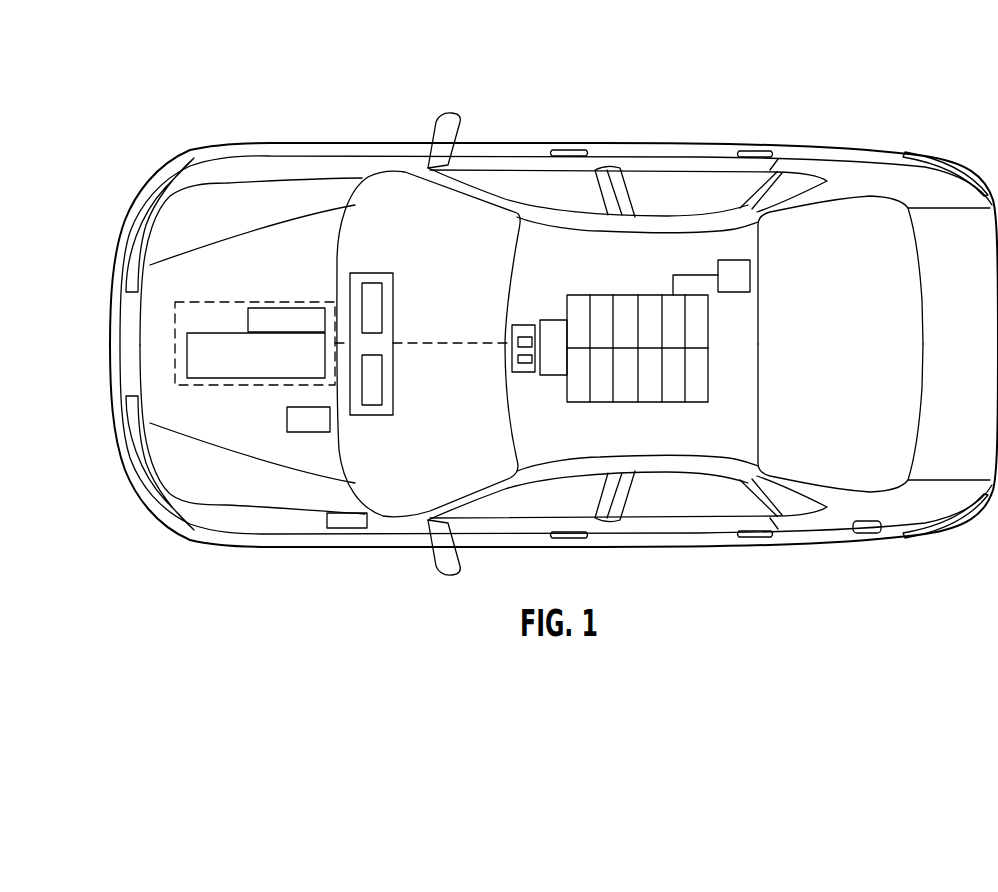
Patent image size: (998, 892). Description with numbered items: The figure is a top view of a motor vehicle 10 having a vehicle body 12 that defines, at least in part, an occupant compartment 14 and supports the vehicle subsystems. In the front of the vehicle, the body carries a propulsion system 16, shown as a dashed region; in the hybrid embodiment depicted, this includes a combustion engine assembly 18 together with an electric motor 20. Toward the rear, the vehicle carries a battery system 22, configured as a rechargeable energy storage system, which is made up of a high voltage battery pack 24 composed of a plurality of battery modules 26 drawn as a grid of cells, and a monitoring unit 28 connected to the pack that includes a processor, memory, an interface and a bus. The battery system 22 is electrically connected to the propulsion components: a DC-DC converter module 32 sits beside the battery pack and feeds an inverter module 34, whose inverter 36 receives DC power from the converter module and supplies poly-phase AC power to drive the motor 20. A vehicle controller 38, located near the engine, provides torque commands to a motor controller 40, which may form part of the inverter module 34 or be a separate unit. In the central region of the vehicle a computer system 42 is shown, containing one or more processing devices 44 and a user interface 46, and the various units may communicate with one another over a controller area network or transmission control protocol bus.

The motor vehicle 10 is at (100, 62).
The vehicle body 12 is at (611, 136).
The occupant compartment 14 is at (655, 465).
The propulsion system 16 is at (217, 300).
The combustion engine assembly 18 is at (280, 378).
The electric motor 20 is at (302, 306).
The battery system 22 is at (752, 382).
The high voltage battery pack 24 is at (708, 317).
The battery modules 26 is at (598, 303).
The monitoring unit 28 is at (750, 273).
The DC-DC converter module 32 is at (556, 322).
The inverter module 34 is at (527, 325).
The inverter 36 is at (517, 341).
The vehicle controller 38 is at (313, 432).
The motor controller 40 is at (527, 364).
The computer system 42 is at (366, 252).
The processing devices 44 is at (382, 307).
The user interface 46 is at (382, 380).